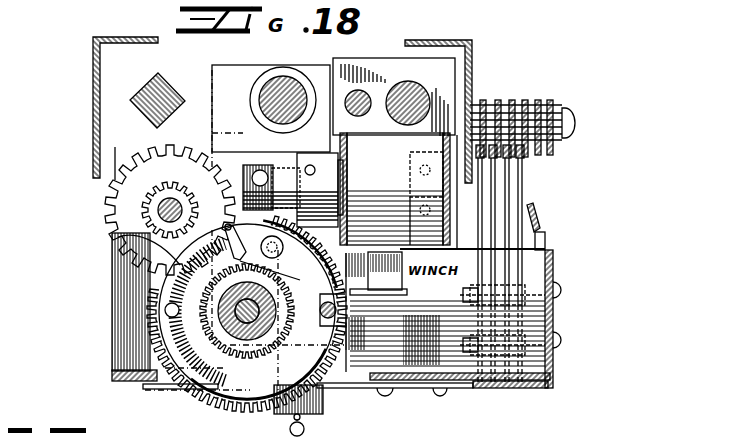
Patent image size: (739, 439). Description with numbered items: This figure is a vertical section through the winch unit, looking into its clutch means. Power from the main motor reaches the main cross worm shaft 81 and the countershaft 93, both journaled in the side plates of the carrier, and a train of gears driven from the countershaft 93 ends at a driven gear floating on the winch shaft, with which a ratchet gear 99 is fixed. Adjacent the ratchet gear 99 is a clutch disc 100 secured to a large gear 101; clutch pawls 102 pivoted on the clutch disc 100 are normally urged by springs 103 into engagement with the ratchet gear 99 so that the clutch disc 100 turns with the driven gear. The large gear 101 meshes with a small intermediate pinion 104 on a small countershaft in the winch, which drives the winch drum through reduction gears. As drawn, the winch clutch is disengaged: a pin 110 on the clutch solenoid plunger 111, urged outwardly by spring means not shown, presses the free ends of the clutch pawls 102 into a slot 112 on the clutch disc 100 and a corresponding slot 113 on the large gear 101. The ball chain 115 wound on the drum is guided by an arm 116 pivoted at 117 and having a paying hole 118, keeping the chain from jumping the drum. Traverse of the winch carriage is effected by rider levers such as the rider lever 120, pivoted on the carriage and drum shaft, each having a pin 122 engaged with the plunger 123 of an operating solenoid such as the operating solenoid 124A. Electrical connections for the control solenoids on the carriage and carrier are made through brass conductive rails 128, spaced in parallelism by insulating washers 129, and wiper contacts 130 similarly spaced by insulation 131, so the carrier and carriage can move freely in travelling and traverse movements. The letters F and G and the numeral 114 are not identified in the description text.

The countershaft 93 is at (190, 70).
The rider lever 120 is at (230, 72).
The main cross worm shaft 81 is at (306, 84).
The pin 122 is at (258, 170).
The plunger 123 is at (285, 173).
The operating solenoid 124A is at (403, 186).
The conductive rails 128 is at (500, 93).
The insulating washers 129 is at (545, 98).
The wiper contacts 130 is at (545, 177).
The insulation 131 is at (525, 278).
The small intermediate pinion 104 is at (120, 214).
The large gear 101 is at (118, 237).
The clutch disc 100 is at (170, 275).
The springs 103 is at (165, 317).
The ratchet gear 99 is at (262, 251).
The clutch pawls 102 is at (240, 261).
The slot 112 is at (336, 294).
The pin 110 is at (332, 309).
The slot 113 is at (356, 403).
The arm 116 is at (384, 345).
The base 114 is at (445, 347).
The pivot 117 is at (452, 398).
The ball chain 115 is at (305, 433).
The paying hole 118 is at (282, 412).
The clutch solenoid plunger 111 is at (386, 433).
The gear F is at (142, 181).
The gear G is at (180, 171).